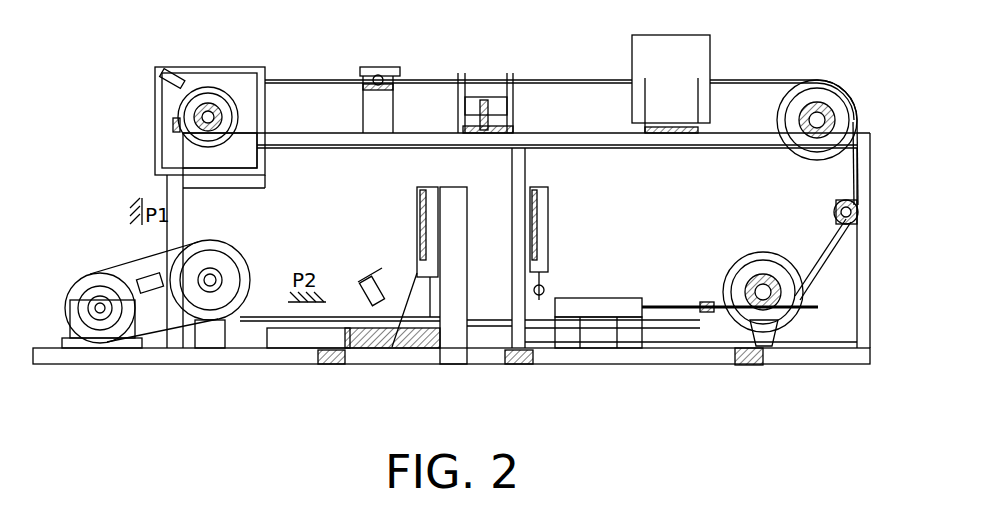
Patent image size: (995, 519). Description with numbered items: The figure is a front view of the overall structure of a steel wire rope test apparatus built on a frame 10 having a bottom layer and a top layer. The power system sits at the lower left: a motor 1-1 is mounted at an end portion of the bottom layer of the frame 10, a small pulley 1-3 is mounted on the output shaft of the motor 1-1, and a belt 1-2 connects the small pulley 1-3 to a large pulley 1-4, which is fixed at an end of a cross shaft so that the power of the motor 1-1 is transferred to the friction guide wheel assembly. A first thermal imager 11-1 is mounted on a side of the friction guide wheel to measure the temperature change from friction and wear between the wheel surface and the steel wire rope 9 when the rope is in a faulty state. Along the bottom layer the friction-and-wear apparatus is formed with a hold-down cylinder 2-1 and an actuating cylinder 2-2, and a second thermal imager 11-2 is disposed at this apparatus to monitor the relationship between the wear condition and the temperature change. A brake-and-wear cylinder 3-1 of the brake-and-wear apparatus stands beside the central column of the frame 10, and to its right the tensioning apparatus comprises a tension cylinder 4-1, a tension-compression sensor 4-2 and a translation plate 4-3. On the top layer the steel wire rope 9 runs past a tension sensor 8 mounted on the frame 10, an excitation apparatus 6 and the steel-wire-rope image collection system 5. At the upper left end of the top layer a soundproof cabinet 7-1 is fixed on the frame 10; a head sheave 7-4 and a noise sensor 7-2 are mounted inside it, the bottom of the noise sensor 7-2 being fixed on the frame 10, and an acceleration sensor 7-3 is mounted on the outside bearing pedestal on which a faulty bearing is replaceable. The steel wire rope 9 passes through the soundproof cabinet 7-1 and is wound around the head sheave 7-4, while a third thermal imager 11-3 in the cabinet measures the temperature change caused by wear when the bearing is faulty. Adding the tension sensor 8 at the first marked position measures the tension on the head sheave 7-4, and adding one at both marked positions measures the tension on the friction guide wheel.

The motor 1-1 is at (82, 345).
The belt 1-2 is at (150, 320).
The small pulley 1-3 is at (83, 298).
The large pulley 1-4 is at (213, 308).
The hold-down cylinder 2-1 is at (417, 280).
The actuating cylinder 2-2 is at (280, 347).
The brake-and-wear cylinder 3-1 is at (523, 352).
The tension cylinder 4-1 is at (605, 307).
The tension-compression sensor 4-2 is at (683, 309).
The translation plate 4-3 is at (817, 307).
The steel-wire-rope image collection system 5 is at (702, 72).
The excitation apparatus 6 is at (508, 80).
The soundproof cabinet 7-1 is at (177, 97).
The noise sensor 7-2 is at (157, 143).
The acceleration sensor 7-3 is at (203, 83).
The head sheave 7-4 is at (230, 97).
The tension sensor 8 is at (385, 68).
The steel wire rope 9 is at (752, 82).
The frame 10 is at (467, 363).
The first thermal imager 11-1 is at (155, 280).
The second thermal imager 11-2 is at (360, 345).
The third thermal imager 11-3 is at (165, 78).